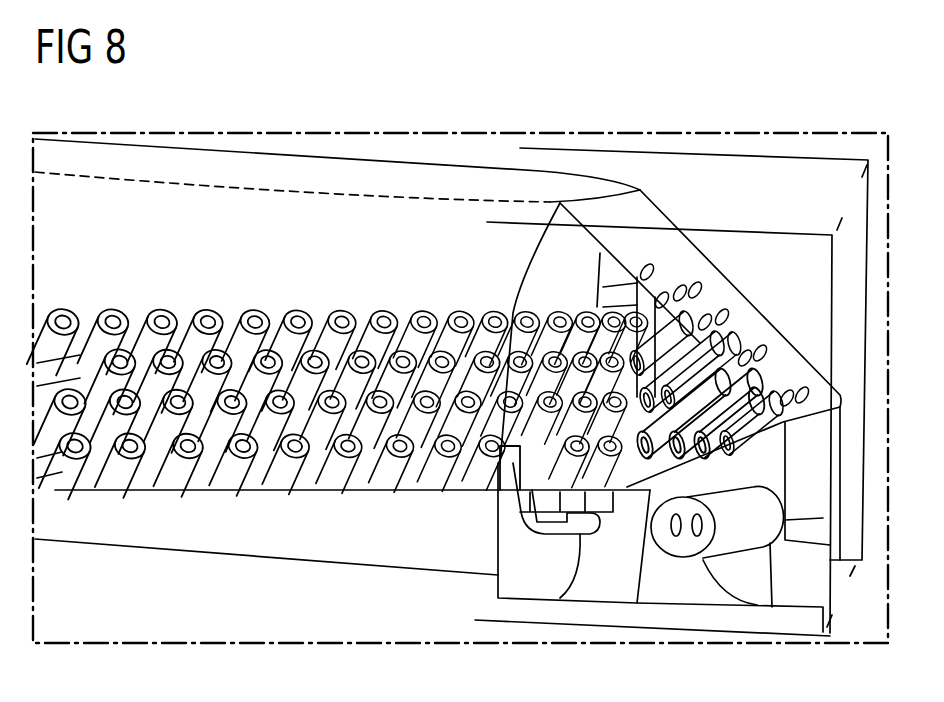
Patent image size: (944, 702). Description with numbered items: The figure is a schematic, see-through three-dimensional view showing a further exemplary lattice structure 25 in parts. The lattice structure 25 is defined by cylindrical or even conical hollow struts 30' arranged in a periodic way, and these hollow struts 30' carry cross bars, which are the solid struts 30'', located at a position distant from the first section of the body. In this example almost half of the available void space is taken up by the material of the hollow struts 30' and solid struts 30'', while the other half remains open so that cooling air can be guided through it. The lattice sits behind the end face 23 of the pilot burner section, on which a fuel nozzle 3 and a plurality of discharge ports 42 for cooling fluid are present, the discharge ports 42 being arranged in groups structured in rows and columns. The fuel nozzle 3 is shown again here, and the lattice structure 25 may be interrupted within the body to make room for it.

The lattice structure 25 is at (342, 293).
The fuel nozzle 3 is at (652, 270).
The discharge port 42 is at (727, 312).
The end face 23 is at (793, 344).
The hollow strut 30' is at (173, 487).
The solid strut 30'' is at (143, 460).